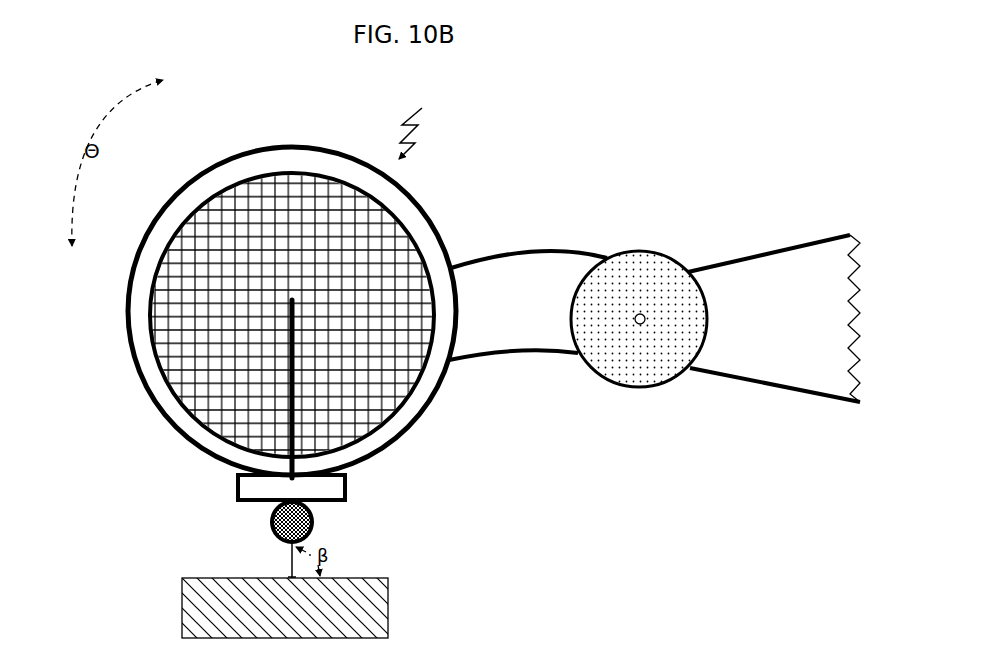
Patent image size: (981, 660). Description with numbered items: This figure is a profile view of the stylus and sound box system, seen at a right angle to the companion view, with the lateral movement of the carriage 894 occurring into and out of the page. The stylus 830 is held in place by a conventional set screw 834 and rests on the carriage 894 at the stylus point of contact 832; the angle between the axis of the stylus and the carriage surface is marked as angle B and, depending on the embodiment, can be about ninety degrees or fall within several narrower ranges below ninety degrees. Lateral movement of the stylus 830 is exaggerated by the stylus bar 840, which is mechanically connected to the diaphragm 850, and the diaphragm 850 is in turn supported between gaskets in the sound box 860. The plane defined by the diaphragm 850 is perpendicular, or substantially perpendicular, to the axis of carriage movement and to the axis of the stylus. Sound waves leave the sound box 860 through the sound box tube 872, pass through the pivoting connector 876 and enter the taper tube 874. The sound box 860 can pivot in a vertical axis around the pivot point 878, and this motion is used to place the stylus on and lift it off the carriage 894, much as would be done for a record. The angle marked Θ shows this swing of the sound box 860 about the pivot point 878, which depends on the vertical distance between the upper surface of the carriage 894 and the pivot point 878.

The stylus 830 is at (290, 547).
The stylus point of contact 832 is at (289, 577).
The set screw 834 is at (312, 522).
The stylus bar 840 is at (297, 365).
The diaphragm 850 is at (351, 272).
The sound box 860 is at (430, 121).
The sound box tube 872 is at (508, 292).
The taper tube 874 is at (788, 307).
The pivoting connector 876 is at (622, 290).
The pivot point 878 is at (647, 323).
The carriage 894 is at (307, 623).